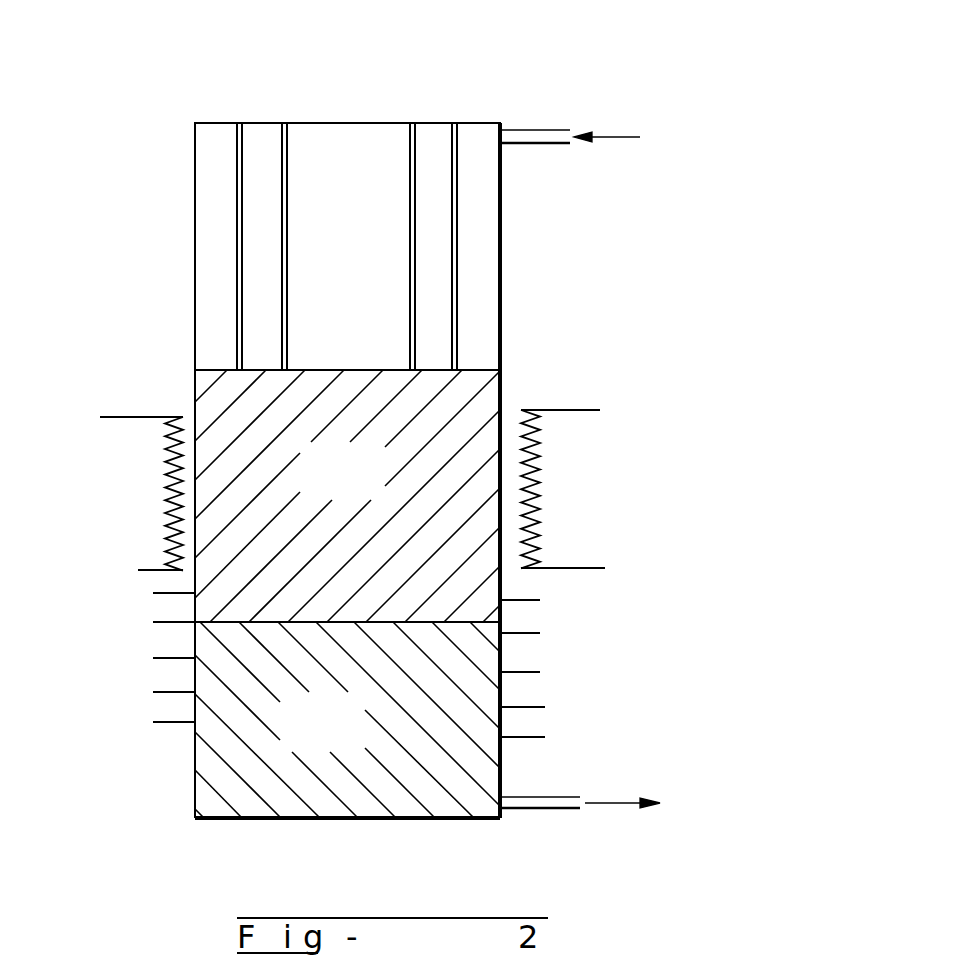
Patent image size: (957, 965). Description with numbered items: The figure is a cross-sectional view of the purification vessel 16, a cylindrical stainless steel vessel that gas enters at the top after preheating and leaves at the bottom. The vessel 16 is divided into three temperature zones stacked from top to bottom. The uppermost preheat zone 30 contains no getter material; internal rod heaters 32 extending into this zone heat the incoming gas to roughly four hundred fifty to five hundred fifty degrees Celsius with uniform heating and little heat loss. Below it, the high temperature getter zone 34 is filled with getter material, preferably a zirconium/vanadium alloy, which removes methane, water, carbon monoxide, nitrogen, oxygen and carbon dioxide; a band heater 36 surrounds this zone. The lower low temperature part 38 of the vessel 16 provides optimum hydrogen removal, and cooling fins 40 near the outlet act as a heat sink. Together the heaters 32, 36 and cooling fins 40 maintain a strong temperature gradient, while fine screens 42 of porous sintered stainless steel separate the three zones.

The purification vessel 16 is at (818, 90).
The preheat zone 30 is at (362, 262).
The internal rod heaters 32 is at (286, 123).
The high temperature getter zone 34 is at (355, 483).
The band heater 36 is at (164, 487).
The low temperature zone 38 is at (330, 735).
The cooling fins 40 is at (127, 572).
The fine screens 42 is at (481, 369).